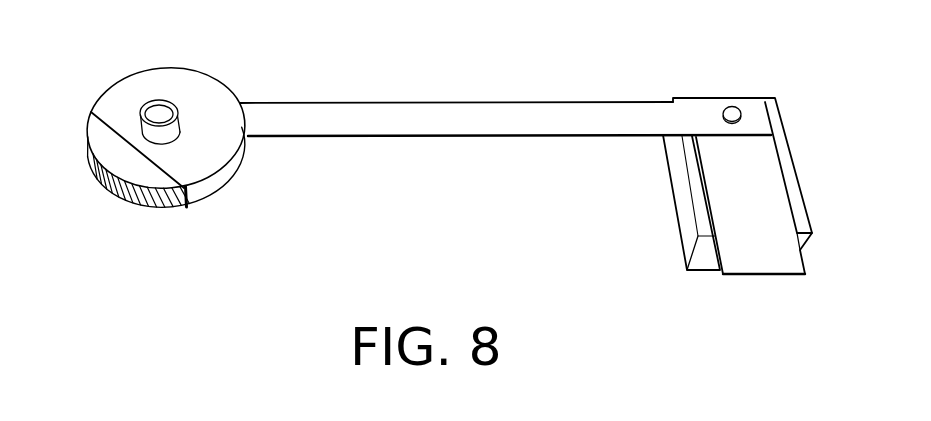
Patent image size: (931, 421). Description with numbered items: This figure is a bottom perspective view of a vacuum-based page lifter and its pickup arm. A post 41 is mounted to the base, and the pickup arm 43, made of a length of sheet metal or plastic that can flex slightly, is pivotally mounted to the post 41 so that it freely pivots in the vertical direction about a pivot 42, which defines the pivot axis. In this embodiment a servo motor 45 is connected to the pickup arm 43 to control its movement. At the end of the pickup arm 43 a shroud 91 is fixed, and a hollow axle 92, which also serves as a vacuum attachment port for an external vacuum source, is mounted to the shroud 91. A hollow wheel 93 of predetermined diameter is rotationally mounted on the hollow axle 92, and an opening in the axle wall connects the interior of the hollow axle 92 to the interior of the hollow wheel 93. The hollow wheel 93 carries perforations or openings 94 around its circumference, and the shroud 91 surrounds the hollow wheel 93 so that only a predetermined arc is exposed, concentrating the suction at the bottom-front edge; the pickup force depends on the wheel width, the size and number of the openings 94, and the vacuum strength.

The post 41 is at (762, 262).
The pivot 42 is at (733, 106).
The pickup arm 43 is at (397, 103).
The servo motor 45 is at (687, 208).
The shroud 91 is at (202, 192).
The hollow axle 92 is at (159, 117).
The hollow wheel 93 is at (102, 138).
The openings 94 is at (145, 207).